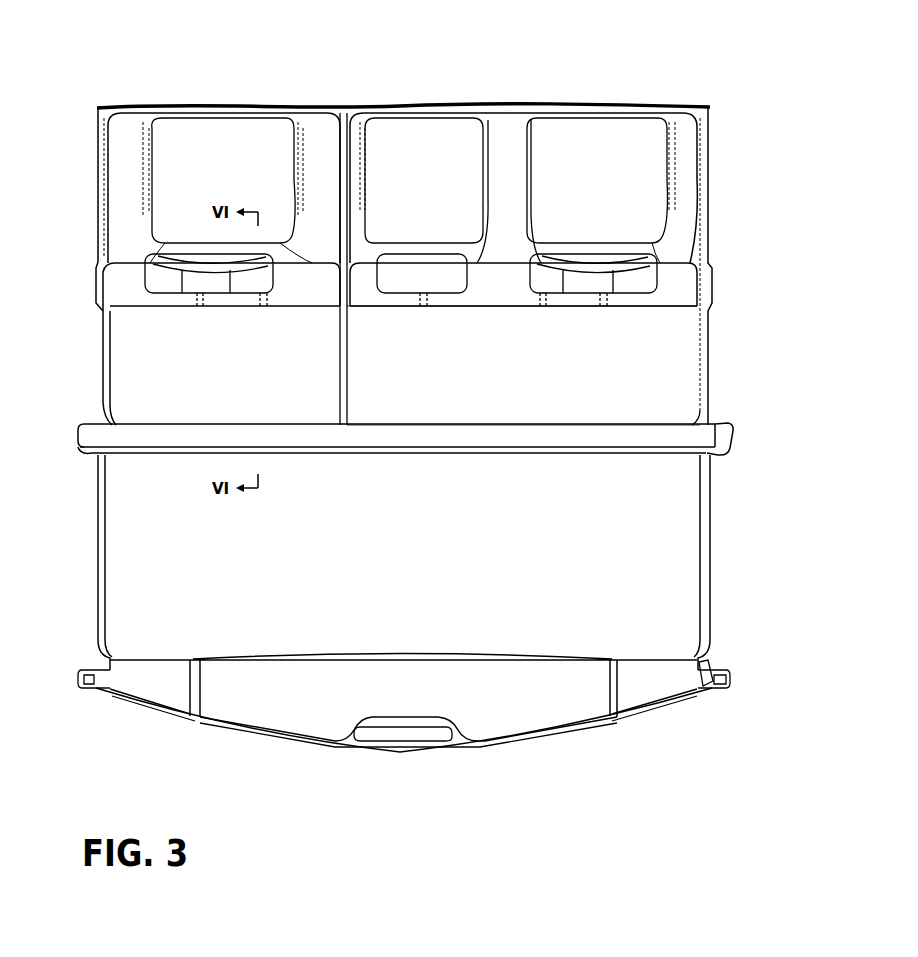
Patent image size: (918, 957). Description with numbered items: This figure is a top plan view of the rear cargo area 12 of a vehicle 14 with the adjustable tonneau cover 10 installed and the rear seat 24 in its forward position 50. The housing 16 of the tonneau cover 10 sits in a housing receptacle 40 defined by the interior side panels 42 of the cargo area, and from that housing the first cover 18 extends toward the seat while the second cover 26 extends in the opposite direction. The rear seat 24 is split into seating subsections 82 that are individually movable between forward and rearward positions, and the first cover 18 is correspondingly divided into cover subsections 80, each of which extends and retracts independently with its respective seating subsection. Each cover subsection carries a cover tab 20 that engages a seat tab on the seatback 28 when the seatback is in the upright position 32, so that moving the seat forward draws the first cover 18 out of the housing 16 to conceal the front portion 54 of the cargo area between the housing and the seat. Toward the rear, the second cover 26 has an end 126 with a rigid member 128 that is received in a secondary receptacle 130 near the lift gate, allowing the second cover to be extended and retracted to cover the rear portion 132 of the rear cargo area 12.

The adjustable tonneau cover 10 is at (760, 556).
The rear cargo area 12 is at (203, 517).
The vehicle 14 is at (671, 84).
The housing 16 is at (660, 437).
The first cover 18 is at (640, 360).
The cover tab 20 is at (605, 302).
The rear seat 24 is at (640, 178).
The second cover 26 is at (705, 520).
The seatback 28 is at (125, 285).
The upright position 32 is at (92, 259).
The housing receptacle 40 is at (732, 437).
The interior side panels 42 is at (95, 564).
The forward position 50 is at (156, 99).
The front portion 54 is at (128, 378).
The cover subsections 80 is at (160, 396).
The seating subsections 82 is at (418, 155).
The end 126 is at (586, 723).
The rigid member 128 is at (703, 675).
The secondary receptacle 130 is at (731, 681).
The rear portion 132 is at (613, 612).